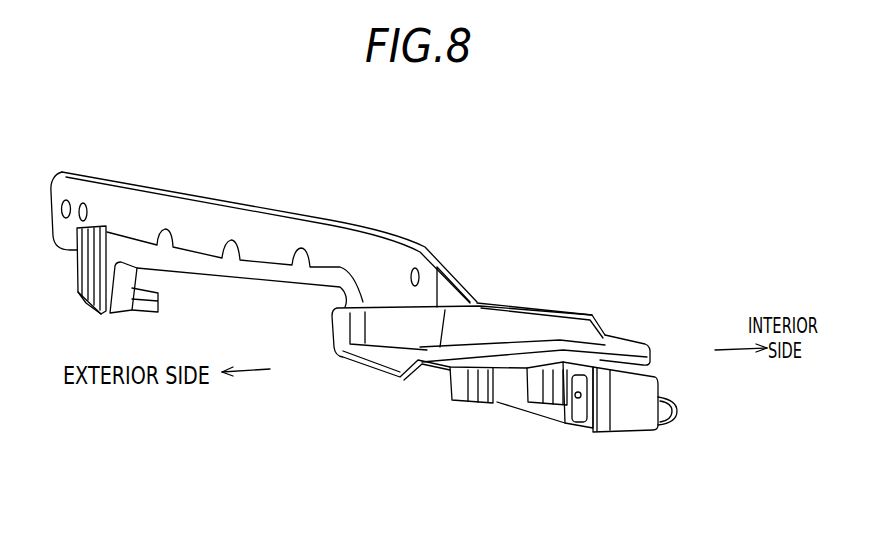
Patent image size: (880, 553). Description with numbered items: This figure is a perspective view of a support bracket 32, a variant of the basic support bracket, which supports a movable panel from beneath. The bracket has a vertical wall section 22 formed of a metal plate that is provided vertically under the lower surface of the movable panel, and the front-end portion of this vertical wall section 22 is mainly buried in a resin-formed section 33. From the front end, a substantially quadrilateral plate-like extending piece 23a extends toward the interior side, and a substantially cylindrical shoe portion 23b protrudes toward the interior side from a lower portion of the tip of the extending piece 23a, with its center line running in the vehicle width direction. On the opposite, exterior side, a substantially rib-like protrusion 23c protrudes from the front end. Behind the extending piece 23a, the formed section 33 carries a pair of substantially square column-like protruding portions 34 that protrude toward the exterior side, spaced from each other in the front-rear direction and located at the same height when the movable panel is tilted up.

The vertical wall section 22 is at (207, 197).
The support bracket 32 is at (370, 176).
The resin-formed section 33 is at (508, 393).
The protruding portions 34 is at (458, 398).
The extending piece 23a is at (624, 417).
The shoe portion 23b is at (678, 409).
The protrusion 23c is at (580, 430).